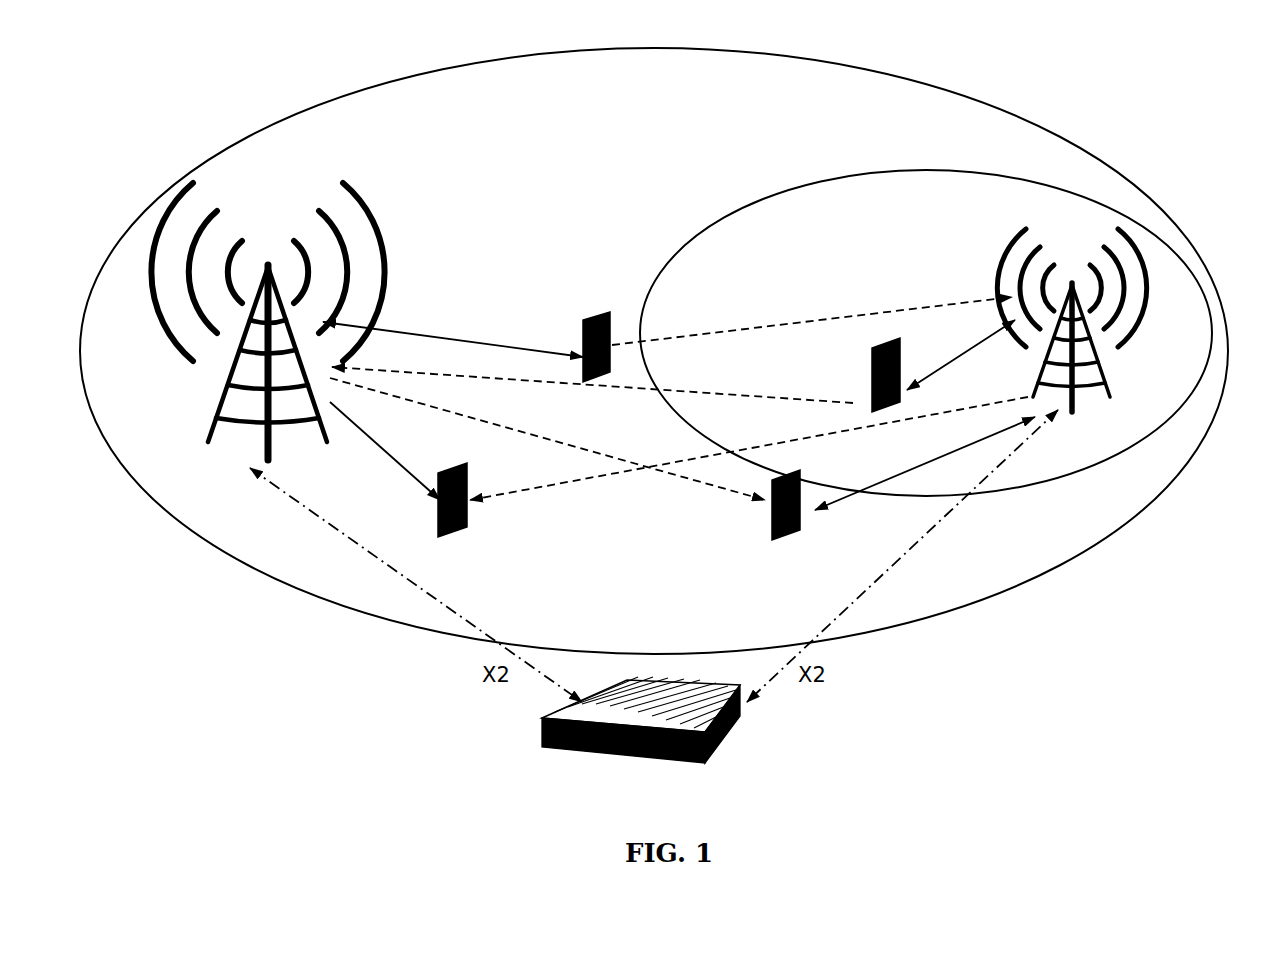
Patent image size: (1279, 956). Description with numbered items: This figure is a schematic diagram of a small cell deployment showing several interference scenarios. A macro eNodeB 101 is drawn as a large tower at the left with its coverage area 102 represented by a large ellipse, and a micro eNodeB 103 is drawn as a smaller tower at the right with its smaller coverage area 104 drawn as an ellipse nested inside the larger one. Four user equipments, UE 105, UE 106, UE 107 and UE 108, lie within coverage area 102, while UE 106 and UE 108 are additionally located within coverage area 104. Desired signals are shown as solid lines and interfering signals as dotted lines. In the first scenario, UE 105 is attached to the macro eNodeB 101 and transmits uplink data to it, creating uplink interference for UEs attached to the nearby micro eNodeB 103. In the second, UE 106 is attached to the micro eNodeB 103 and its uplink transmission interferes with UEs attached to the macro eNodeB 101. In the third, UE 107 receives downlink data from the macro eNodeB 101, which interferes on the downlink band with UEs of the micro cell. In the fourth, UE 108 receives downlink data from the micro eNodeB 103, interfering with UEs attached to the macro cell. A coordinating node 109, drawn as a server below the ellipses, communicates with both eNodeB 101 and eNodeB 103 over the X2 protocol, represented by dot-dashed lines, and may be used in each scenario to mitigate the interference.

The macro eNodeB 101 is at (197, 424).
The coverage area 102 is at (318, 100).
The micro eNodeB 103 is at (1100, 263).
The coverage area 104 is at (788, 190).
The UE 105 is at (578, 321).
The UE 106 is at (866, 387).
The UE 107 is at (480, 525).
The UE 108 is at (760, 517).
The coordinating node 109 is at (735, 725).